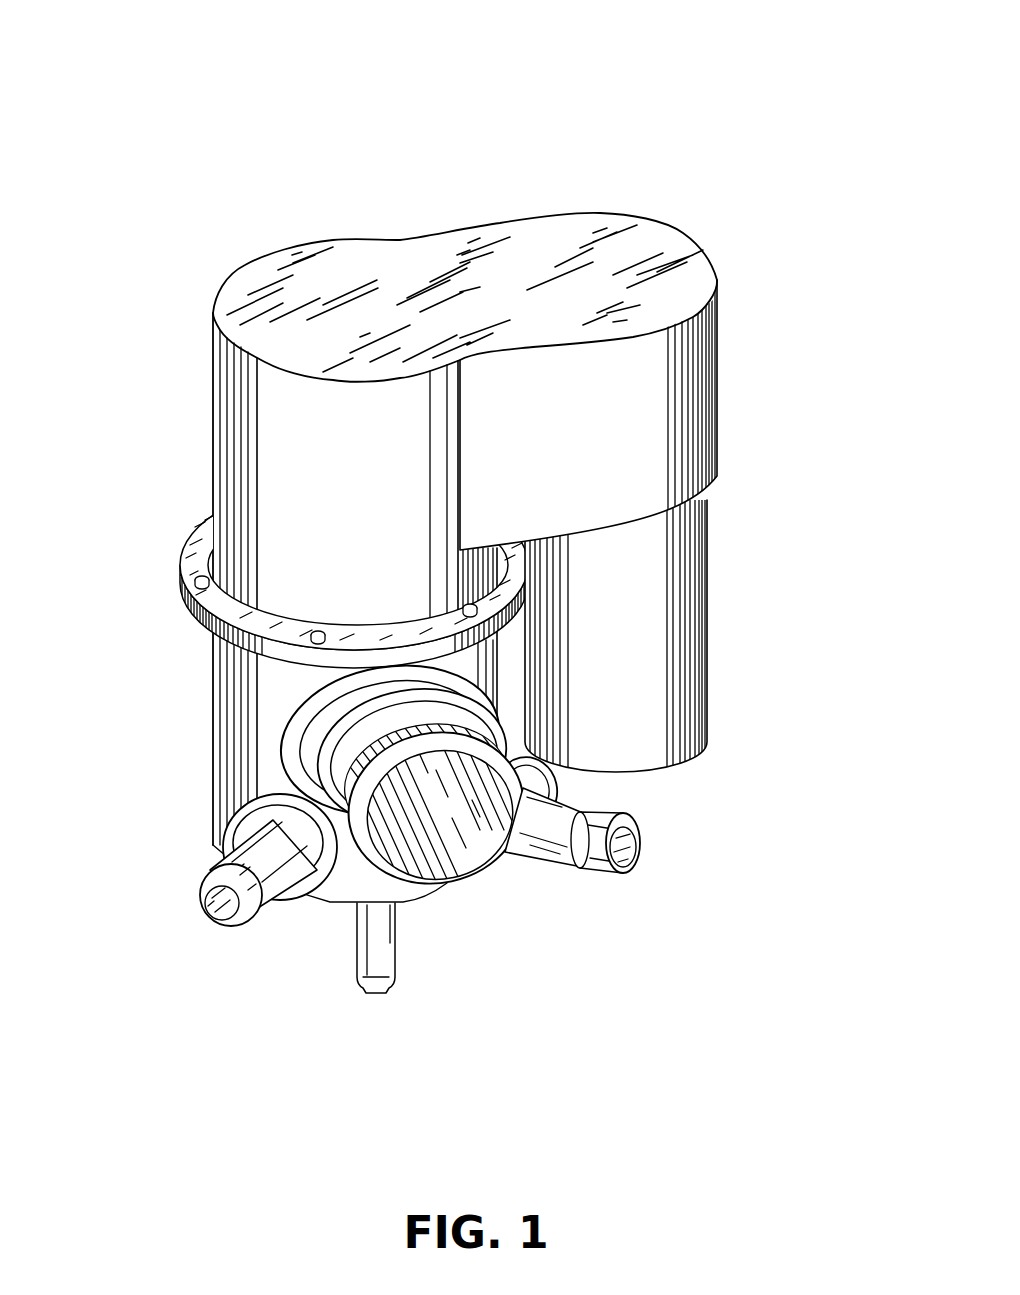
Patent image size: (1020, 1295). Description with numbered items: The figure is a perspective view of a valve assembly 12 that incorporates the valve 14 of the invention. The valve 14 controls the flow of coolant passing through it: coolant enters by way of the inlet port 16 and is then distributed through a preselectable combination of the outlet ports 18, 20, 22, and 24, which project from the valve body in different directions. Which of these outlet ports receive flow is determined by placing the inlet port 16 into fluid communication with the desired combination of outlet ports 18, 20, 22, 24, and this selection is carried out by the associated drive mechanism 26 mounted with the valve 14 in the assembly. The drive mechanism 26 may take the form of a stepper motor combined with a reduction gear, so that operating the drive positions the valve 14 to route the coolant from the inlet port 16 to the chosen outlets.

The valve assembly 12 is at (622, 170).
The valve 14 is at (212, 730).
The inlet port 16 is at (455, 858).
The outlet port 18 is at (197, 530).
The outlet port 20 is at (635, 852).
The outlet port 22 is at (207, 928).
The outlet port 24 is at (373, 990).
The drive mechanism 26 is at (718, 393).